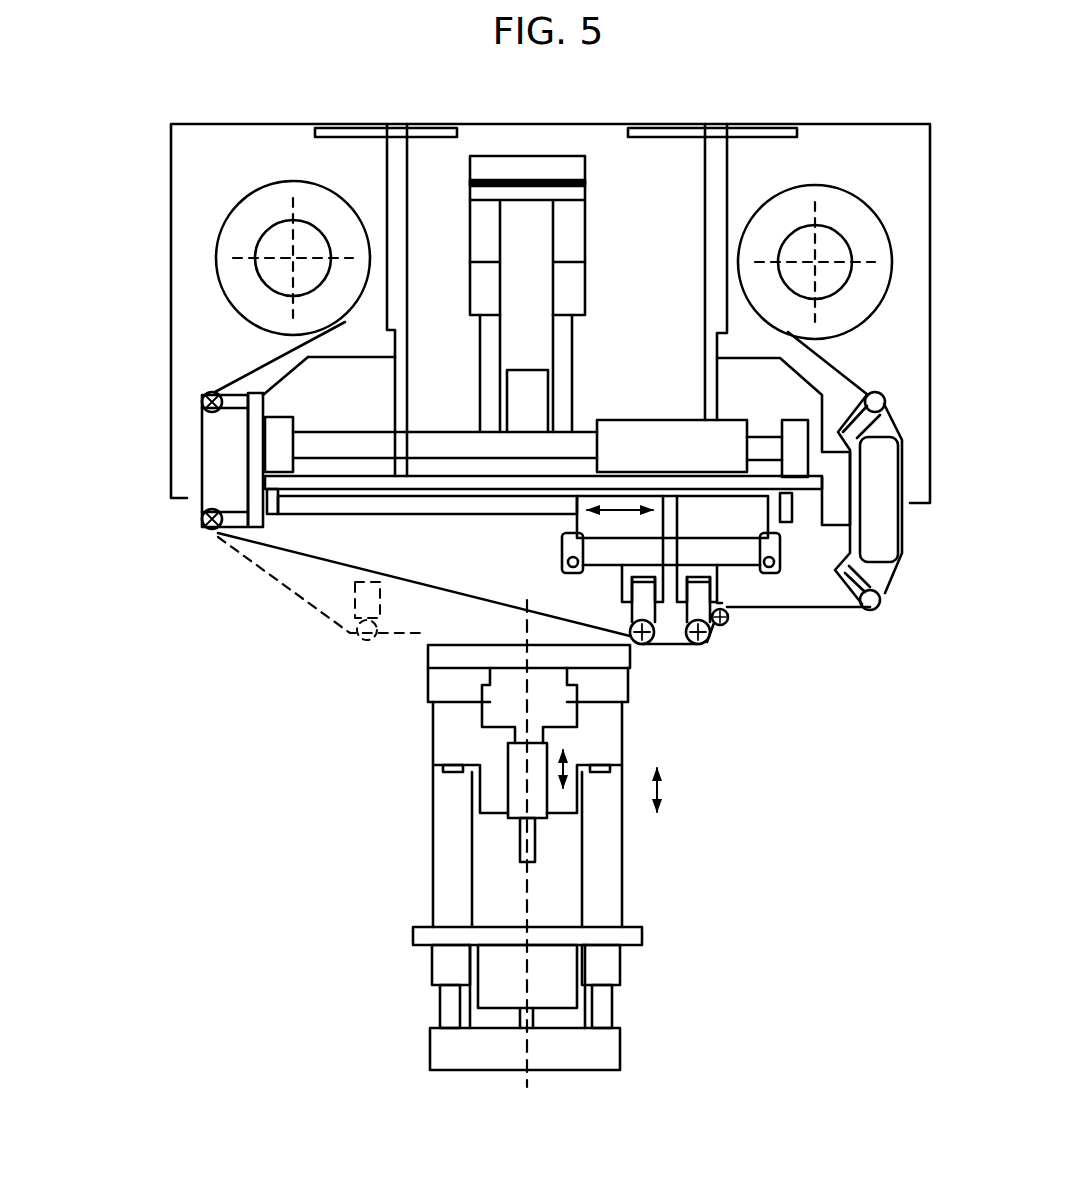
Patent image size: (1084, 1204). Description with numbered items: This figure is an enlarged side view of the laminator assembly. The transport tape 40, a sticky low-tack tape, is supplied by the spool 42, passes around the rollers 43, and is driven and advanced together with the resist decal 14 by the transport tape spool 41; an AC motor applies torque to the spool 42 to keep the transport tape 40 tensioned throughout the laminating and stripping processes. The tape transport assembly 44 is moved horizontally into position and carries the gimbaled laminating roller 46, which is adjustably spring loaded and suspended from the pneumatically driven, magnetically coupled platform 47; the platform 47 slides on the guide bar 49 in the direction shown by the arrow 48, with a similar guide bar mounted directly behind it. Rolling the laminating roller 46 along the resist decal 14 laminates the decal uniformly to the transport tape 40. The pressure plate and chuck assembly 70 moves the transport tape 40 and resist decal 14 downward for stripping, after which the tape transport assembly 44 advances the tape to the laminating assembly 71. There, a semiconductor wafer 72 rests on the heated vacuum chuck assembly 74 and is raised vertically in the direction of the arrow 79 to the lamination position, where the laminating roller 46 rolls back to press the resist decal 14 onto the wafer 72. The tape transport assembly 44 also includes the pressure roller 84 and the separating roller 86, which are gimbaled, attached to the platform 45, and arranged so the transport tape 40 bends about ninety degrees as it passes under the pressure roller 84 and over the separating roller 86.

The resist decal 14 is at (478, 614).
The transport tape 40 is at (357, 570).
The transport tape spool 41 is at (876, 210).
The spool 42 is at (270, 188).
The rollers 43 is at (207, 515).
The tape transport assembly 44 is at (238, 587).
The platform 45 is at (720, 522).
The gimbaled laminating roller 46 is at (630, 630).
The platform 47 is at (573, 518).
The arrow 48 is at (613, 512).
The guide bar 49 is at (433, 513).
The pressure plate and chuck assembly 70 is at (588, 368).
The laminating assembly 71 is at (557, 843).
The semiconductor wafer 72 is at (428, 655).
The heated vacuum chuck assembly 74 is at (627, 698).
The arrow 79 is at (660, 787).
The pressure roller 84 is at (707, 642).
The separating roller 86 is at (728, 620).